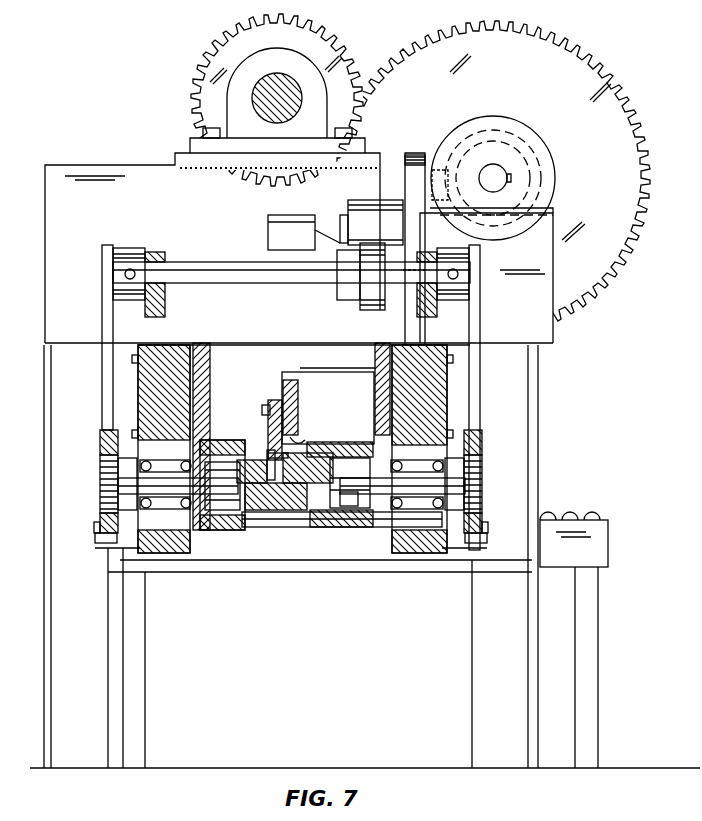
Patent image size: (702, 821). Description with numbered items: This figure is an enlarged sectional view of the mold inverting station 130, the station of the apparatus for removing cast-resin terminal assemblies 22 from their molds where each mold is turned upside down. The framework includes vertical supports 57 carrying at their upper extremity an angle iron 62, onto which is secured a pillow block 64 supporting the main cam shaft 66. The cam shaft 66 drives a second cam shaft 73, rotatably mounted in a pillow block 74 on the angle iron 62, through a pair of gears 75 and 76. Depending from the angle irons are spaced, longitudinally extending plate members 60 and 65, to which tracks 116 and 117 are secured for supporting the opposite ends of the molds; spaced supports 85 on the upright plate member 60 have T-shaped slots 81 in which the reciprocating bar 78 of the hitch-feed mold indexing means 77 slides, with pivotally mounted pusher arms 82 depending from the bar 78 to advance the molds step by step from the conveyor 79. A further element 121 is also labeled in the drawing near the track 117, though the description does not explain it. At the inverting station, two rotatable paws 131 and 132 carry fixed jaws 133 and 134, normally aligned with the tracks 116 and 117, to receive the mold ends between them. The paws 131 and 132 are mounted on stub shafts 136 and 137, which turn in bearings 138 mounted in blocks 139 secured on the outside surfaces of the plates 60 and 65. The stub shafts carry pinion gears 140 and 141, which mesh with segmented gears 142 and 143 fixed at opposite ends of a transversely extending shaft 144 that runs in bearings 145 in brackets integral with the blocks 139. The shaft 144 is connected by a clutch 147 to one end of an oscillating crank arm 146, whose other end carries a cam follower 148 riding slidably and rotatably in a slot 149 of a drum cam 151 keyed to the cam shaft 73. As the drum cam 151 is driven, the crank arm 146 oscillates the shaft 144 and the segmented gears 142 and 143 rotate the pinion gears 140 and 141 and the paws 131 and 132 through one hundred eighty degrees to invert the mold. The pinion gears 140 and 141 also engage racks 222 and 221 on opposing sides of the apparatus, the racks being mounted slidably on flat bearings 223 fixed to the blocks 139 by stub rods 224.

The gear 76 is at (300, 30).
The gear 75 is at (546, 48).
The pillow block 64 is at (262, 58).
The main cam shaft 66 is at (258, 106).
The angle iron 62 is at (83, 172).
The pillow block 74 is at (550, 214).
The cam follower 148 is at (437, 152).
The drum cam 151 is at (552, 165).
The slot 149 is at (536, 136).
The cam shaft 73 is at (490, 172).
The clutch 147 is at (334, 214).
The crank arm 146 is at (405, 223).
The shaft 144 is at (232, 262).
The bearing 145 is at (153, 252).
The block 139 is at (185, 345).
The plate member 65 is at (205, 345).
The plate member 60 is at (385, 345).
The support 85 is at (340, 380).
The segmented gear 143 is at (106, 378).
The segmented gear 142 is at (482, 402).
The reciprocating bar 78 is at (298, 403).
The pusher arm 82 is at (268, 418).
The mold indexing means 77 is at (273, 392).
The fixed jaw 134 is at (235, 445).
The track 117 is at (265, 458).
The key 121 is at (273, 449).
The T-shaped slot 81 is at (296, 440).
The rotatable paw 131 is at (352, 441).
The fixed jaw 133 is at (314, 450).
The track 116 is at (303, 528).
The terminal assembly 22 is at (286, 528).
The bearing 138 is at (184, 462).
The stub shaft 137 is at (167, 497).
The stub shaft 136 is at (420, 497).
The pinion gear 141 is at (100, 477).
The pinion gear 140 is at (484, 478).
The rack 221 is at (100, 526).
The rack 222 is at (483, 528).
The flat bearing 223 is at (98, 540).
The stub rod 224 is at (100, 552).
The rotatable paw 132 is at (226, 558).
The mold inverting station 130 is at (236, 628).
The vertical support 57 is at (44, 641).
The conveyor 79 is at (585, 518).